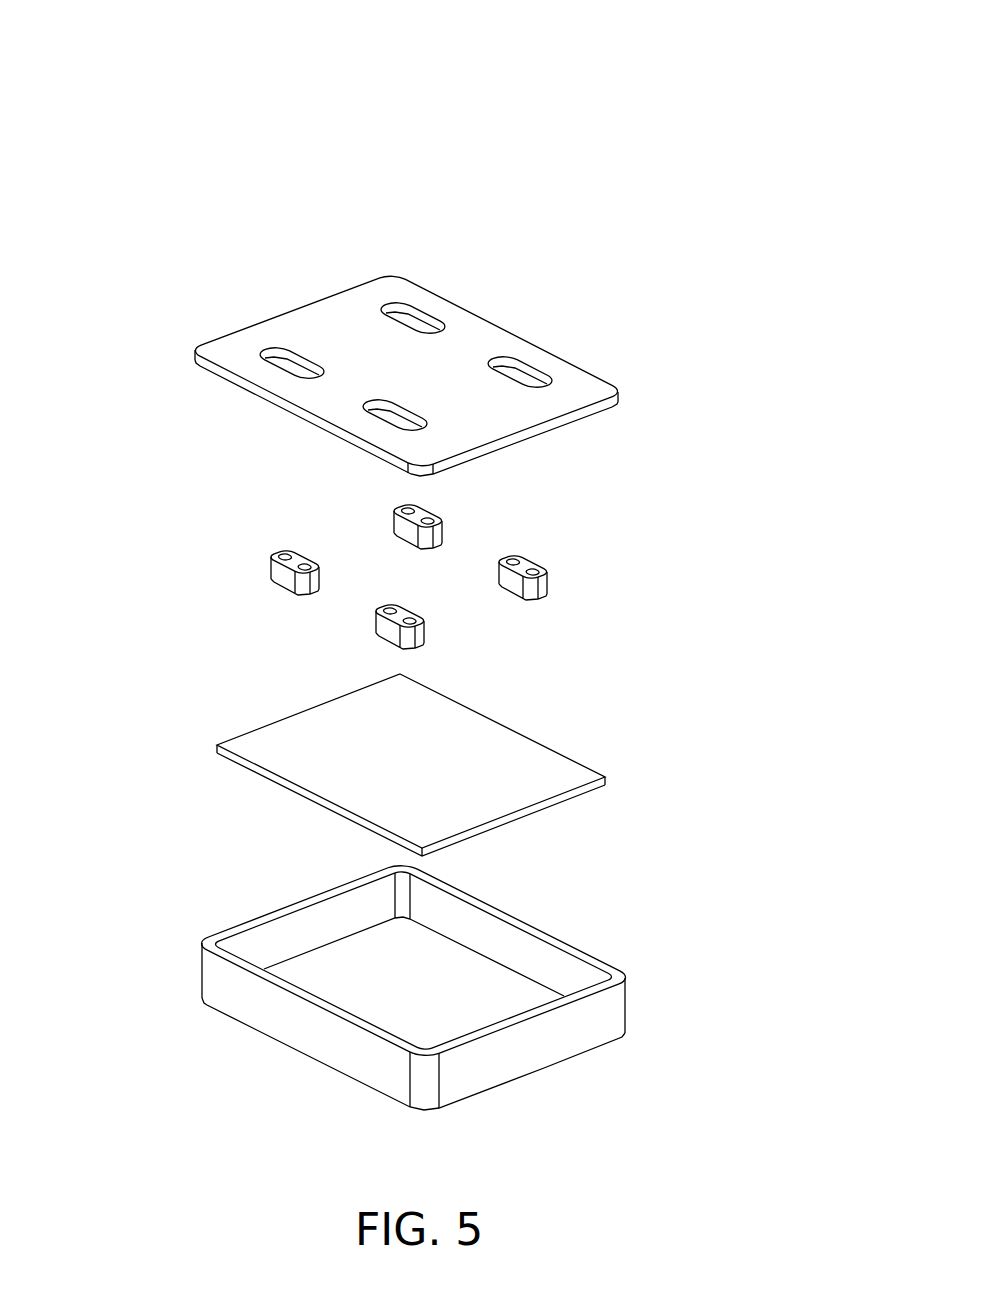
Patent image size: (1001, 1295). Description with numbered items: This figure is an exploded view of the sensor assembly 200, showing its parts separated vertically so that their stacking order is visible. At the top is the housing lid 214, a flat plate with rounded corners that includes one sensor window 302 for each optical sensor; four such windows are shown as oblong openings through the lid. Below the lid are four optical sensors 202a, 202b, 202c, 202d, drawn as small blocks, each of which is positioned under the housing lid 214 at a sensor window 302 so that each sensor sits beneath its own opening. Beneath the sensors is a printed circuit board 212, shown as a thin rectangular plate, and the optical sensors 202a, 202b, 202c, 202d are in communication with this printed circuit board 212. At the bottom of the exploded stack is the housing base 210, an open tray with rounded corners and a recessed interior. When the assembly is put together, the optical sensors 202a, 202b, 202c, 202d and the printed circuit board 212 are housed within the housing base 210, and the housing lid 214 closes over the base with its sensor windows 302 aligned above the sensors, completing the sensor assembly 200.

The sensor assembly 200 is at (146, 143).
The sensor window 302 is at (415, 323).
The housing lid 214 is at (500, 327).
The optical sensor 202a is at (434, 513).
The optical sensor 202b is at (275, 574).
The optical sensor 202c is at (545, 587).
The optical sensor 202d is at (388, 631).
The printed circuit board 212 is at (550, 769).
The housing base 210 is at (616, 1006).